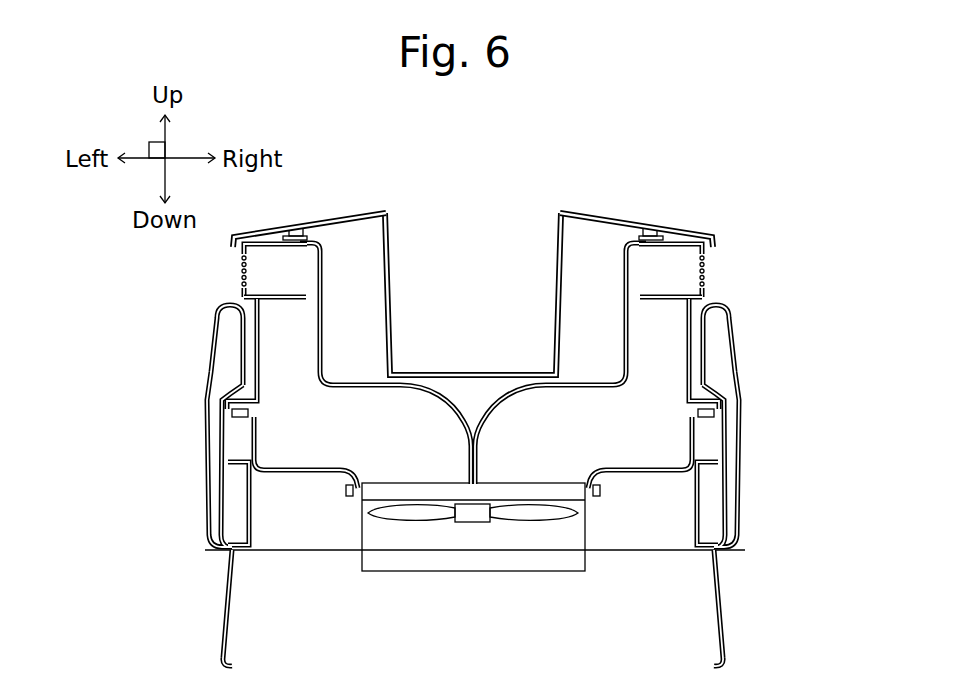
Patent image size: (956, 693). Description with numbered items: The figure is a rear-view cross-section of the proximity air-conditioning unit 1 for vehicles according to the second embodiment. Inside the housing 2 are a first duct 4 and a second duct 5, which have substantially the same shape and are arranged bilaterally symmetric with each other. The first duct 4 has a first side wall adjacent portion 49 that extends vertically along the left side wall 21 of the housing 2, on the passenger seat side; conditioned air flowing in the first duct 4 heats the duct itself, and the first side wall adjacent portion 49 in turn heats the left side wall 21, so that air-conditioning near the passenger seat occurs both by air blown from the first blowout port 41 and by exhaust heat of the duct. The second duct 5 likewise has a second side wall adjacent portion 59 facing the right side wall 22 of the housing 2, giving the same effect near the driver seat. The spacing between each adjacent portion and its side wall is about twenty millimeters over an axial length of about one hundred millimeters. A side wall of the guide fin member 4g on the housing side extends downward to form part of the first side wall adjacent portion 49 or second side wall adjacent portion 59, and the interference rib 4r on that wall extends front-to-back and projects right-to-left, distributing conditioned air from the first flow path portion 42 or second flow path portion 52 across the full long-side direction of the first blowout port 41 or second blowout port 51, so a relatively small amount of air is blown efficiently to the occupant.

The proximity air-conditioning unit for vehicles 1 is at (694, 206).
The housing 2 is at (719, 575).
The first duct 4 is at (323, 344).
The guide fin member 4g is at (268, 243).
The interference rib 4r is at (283, 296).
The second duct 5 is at (622, 308).
The left side wall 21 is at (223, 433).
The right side wall 22 is at (723, 432).
The first blowout port 41 is at (232, 266).
The first flow path portion 42 is at (302, 466).
The first side wall adjacent portion 49 is at (257, 367).
The second blowout port 51 is at (705, 267).
The second flow path portion 52 is at (644, 466).
The second side wall adjacent portion 59 is at (688, 342).